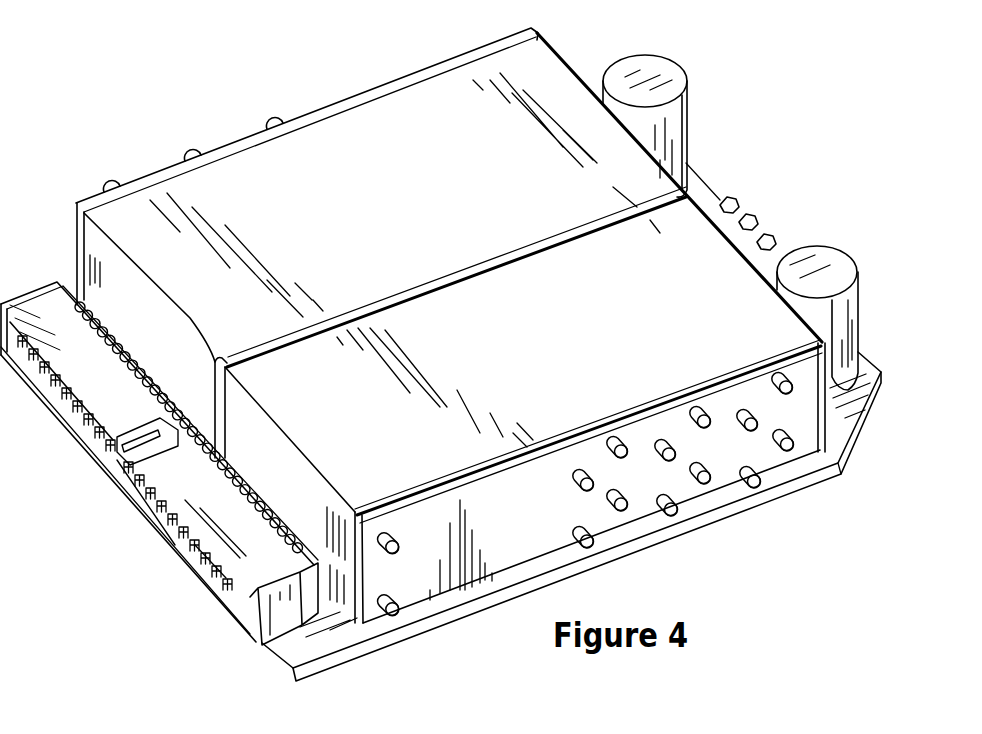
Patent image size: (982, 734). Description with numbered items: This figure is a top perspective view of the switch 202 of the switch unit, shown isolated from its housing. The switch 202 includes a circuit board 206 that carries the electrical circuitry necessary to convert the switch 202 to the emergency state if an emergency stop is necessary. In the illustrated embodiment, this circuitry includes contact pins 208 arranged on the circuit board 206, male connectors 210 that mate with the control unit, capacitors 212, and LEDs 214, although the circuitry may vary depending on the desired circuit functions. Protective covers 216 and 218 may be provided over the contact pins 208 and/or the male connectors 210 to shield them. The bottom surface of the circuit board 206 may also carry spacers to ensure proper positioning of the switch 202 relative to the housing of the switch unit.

The switch 202 is at (450, 315).
The circuit board 206 is at (586, 74).
The contact pins 208 is at (590, 545).
The male connectors 210 is at (228, 598).
The capacitors 212 is at (647, 73).
The LEDs 214 is at (728, 197).
The protective cover 216 is at (458, 125).
The protective cover 218 is at (266, 643).